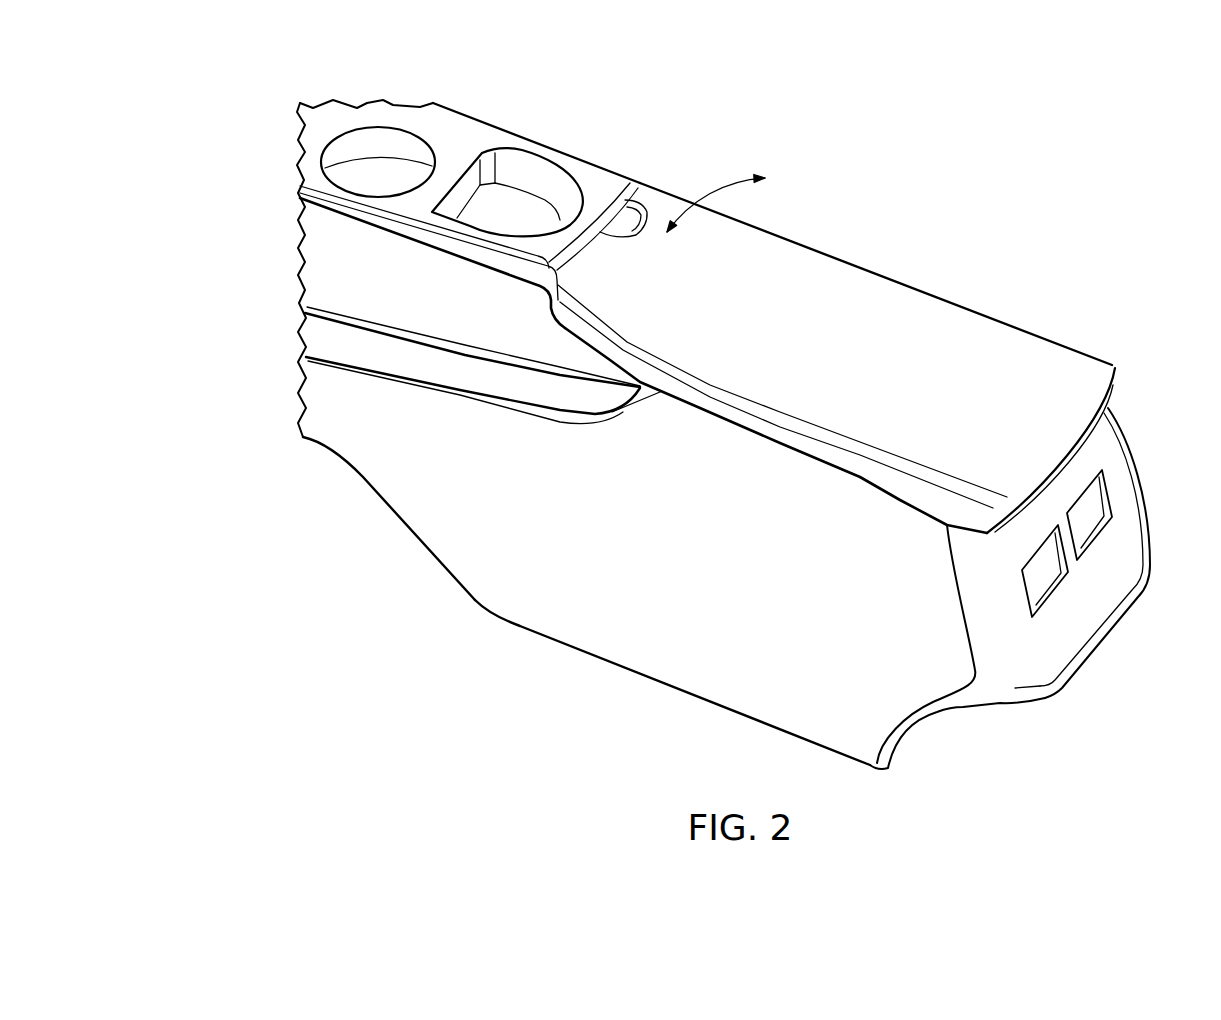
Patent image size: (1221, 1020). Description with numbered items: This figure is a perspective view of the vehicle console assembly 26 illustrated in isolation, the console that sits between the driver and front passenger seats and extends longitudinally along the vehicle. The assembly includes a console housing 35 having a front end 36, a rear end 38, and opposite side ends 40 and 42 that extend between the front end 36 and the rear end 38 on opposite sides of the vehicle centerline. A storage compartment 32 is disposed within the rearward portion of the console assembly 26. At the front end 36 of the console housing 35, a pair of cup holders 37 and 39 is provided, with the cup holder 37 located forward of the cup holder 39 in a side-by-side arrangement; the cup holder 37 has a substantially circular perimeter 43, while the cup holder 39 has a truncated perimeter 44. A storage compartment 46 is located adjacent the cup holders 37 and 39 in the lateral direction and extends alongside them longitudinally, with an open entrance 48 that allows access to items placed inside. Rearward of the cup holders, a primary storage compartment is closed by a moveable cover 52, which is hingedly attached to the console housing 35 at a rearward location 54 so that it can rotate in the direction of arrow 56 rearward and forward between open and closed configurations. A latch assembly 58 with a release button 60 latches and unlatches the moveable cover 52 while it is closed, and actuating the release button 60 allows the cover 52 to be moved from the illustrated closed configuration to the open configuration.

The vehicle console assembly 26 is at (908, 121).
The storage compartment 32 is at (993, 350).
The console housing 35 is at (452, 505).
The front end 36 is at (185, 202).
The cup holder 37 is at (352, 97).
The rear end 38 is at (1157, 517).
The cup holder 39 is at (548, 148).
The side end 40 is at (550, 588).
The side end 42 is at (977, 250).
The circular perimeter 43 is at (383, 140).
The truncated perimeter 44 is at (513, 165).
The storage compartment 46 is at (330, 350).
The open entrance 48 is at (417, 363).
The moveable cover 52 is at (760, 248).
The rearward location 54 is at (1112, 370).
The arrow 56 is at (738, 180).
The latch assembly 58 is at (637, 177).
The release button 60 is at (622, 226).